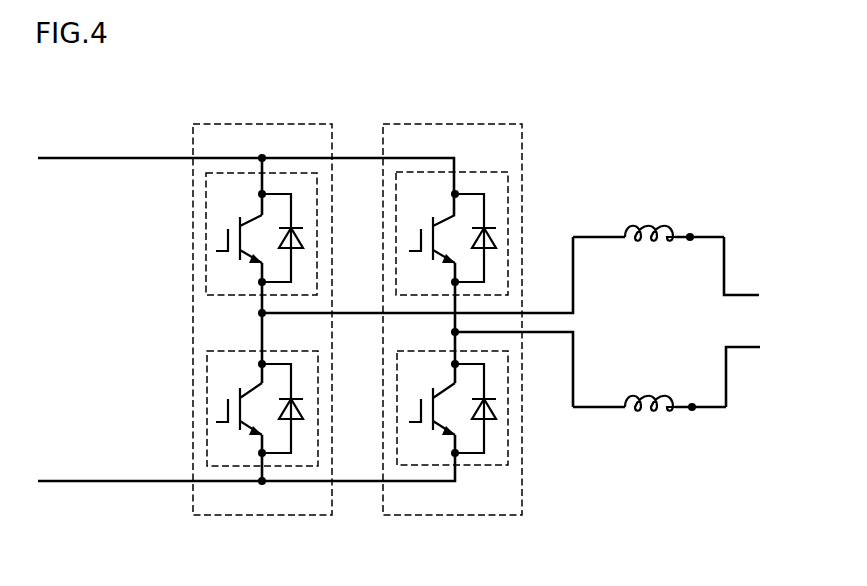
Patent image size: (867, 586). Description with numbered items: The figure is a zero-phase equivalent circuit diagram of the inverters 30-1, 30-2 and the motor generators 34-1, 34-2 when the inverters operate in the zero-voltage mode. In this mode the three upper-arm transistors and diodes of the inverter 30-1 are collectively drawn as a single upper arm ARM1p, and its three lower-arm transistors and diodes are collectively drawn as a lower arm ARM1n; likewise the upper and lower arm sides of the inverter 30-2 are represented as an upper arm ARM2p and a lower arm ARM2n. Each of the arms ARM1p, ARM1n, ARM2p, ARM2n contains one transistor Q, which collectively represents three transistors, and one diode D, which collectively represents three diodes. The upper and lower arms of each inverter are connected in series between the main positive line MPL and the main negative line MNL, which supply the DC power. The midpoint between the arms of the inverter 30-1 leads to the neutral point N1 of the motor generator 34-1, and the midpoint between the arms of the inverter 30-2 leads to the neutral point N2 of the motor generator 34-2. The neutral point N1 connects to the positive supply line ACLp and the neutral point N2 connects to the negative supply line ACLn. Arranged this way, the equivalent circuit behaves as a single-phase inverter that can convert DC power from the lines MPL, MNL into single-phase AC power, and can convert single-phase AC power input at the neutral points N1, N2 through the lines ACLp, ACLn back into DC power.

The inverter 30-1 is at (383, 323).
The inverter 30-2 is at (478, 323).
The motor generator 34-1 is at (657, 212).
The motor generator 34-2 is at (657, 423).
The upper arm ARM1p is at (279, 184).
The lower arm ARM1n is at (230, 467).
The upper arm ARM2p is at (487, 172).
The lower arm ARM2n is at (477, 467).
The transistor Q is at (223, 220).
The diode D is at (278, 233).
The main positive line MPL is at (73, 157).
The main negative line MNL is at (75, 483).
The neutral point N1 is at (690, 237).
The neutral point N2 is at (692, 407).
The positive supply line ACLp is at (727, 257).
The negative supply line ACLn is at (726, 383).